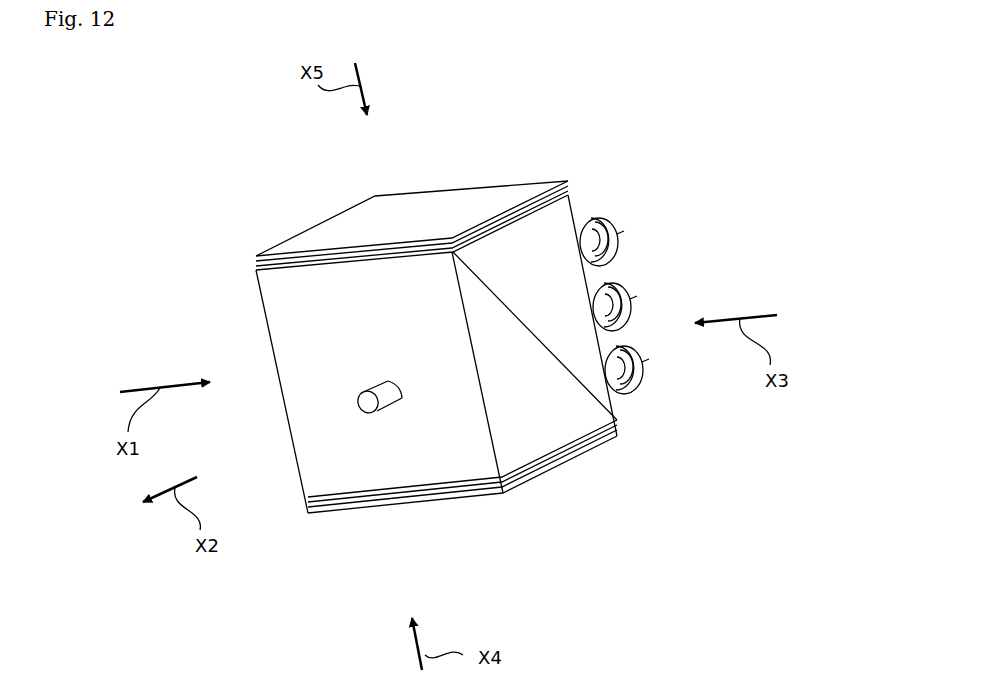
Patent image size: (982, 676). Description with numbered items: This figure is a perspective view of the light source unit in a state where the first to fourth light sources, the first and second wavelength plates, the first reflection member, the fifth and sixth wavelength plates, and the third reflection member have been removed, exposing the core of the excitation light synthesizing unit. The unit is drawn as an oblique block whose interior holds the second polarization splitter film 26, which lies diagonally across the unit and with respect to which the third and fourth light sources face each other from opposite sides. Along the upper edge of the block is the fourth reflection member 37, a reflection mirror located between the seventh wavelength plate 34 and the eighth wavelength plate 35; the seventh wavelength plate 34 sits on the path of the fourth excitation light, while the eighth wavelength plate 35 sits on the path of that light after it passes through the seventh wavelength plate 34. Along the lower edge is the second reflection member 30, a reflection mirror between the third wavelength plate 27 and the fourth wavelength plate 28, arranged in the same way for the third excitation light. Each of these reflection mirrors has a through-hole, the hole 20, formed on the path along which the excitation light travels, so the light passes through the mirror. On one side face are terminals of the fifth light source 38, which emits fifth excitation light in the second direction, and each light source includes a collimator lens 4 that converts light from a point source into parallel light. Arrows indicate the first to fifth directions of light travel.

The hole 20 is at (452, 335).
The second polarization splitter film 26 is at (350, 312).
The fourth reflection member 37 is at (542, 200).
The seventh wavelength plate 34 is at (565, 190).
The eighth wavelength plate 35 is at (571, 200).
The second reflection member 30 is at (348, 512).
The third wavelength plate 27 is at (468, 495).
The fourth wavelength plate 28 is at (478, 487).
The collimator lens 4 is at (628, 302).
The fifth light source 38 is at (614, 316).